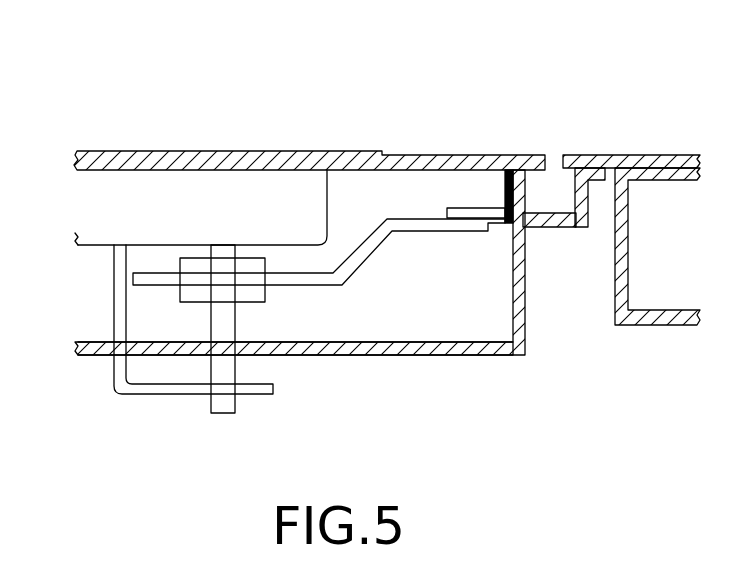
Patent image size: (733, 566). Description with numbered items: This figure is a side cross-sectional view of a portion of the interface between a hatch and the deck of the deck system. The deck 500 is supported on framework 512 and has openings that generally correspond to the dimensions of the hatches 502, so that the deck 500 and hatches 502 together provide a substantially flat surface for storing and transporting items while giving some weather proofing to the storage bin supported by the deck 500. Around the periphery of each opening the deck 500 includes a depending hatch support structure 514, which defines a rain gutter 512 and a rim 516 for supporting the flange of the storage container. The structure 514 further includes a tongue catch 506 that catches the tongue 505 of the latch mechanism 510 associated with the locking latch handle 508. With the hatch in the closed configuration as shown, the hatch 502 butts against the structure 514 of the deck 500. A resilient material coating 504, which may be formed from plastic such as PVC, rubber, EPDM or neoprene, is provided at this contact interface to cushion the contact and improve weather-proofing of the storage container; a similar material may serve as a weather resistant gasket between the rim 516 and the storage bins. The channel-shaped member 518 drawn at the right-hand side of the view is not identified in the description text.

The deck 500 is at (620, 155).
The hatch 502 is at (545, 154).
The resilient material coating 504 is at (512, 153).
The tongue 505 is at (377, 248).
The tongue catch 506 is at (453, 205).
The locking latch handle 508 is at (222, 150).
The latch mechanism 510 is at (146, 410).
The rain gutter 512 is at (547, 180).
The hatch support structure 514 is at (526, 357).
The rim 516 is at (432, 357).
The channel member 518 is at (660, 327).